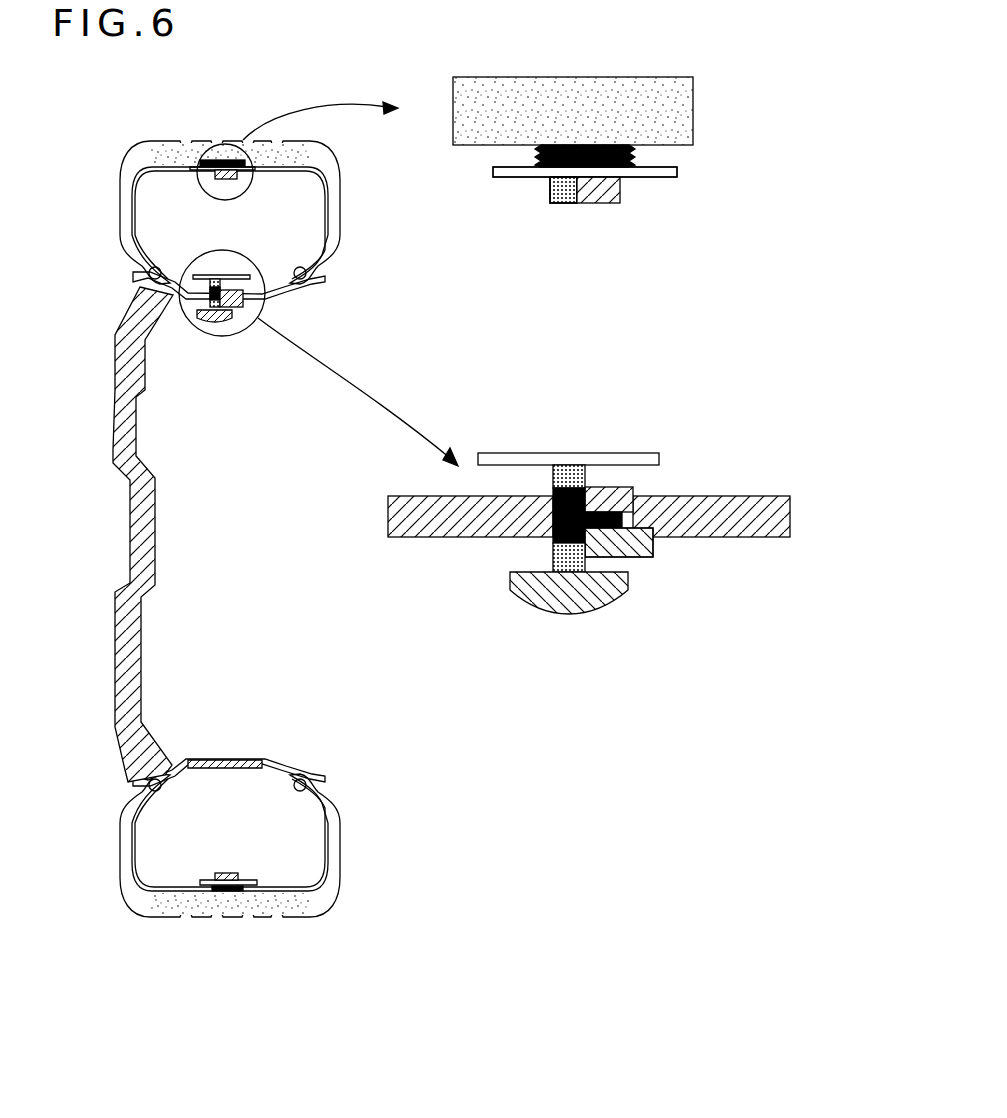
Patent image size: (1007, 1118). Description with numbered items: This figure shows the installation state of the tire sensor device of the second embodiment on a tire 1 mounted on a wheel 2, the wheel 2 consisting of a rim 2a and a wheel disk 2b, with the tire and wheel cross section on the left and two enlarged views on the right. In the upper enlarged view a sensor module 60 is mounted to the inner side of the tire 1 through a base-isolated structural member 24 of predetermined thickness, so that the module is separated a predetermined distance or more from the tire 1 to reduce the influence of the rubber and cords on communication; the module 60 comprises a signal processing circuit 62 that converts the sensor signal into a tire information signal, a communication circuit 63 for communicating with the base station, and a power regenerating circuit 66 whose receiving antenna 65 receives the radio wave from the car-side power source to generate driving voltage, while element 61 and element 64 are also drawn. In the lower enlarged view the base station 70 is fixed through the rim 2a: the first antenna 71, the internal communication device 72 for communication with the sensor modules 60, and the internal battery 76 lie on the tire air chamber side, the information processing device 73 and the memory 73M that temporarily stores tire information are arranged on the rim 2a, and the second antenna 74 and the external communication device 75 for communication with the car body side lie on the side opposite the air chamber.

The tire 1 is at (170, 138).
The wheel 2 is at (425, 529).
The rim 2a is at (285, 303).
The wheel disk 2b is at (157, 485).
The base-isolated structural member 24 is at (605, 145).
The sensor module 60 is at (434, 484).
The sensor 61 is at (600, 203).
The signal processing circuit 62 is at (556, 203).
The communication circuit 63 is at (518, 173).
The power source 64 is at (563, 190).
The receiving antenna 65 is at (655, 187).
The power regenerating circuit 66 is at (563, 190).
The base station 70 is at (459, 455).
The first antenna 71 is at (610, 452).
The internal communication device 72 is at (552, 477).
The information processing device 73 is at (653, 547).
The memory 73M is at (619, 542).
The second antenna 74 is at (537, 520).
The external communication device 75 is at (540, 557).
The internal battery 76 is at (633, 482).